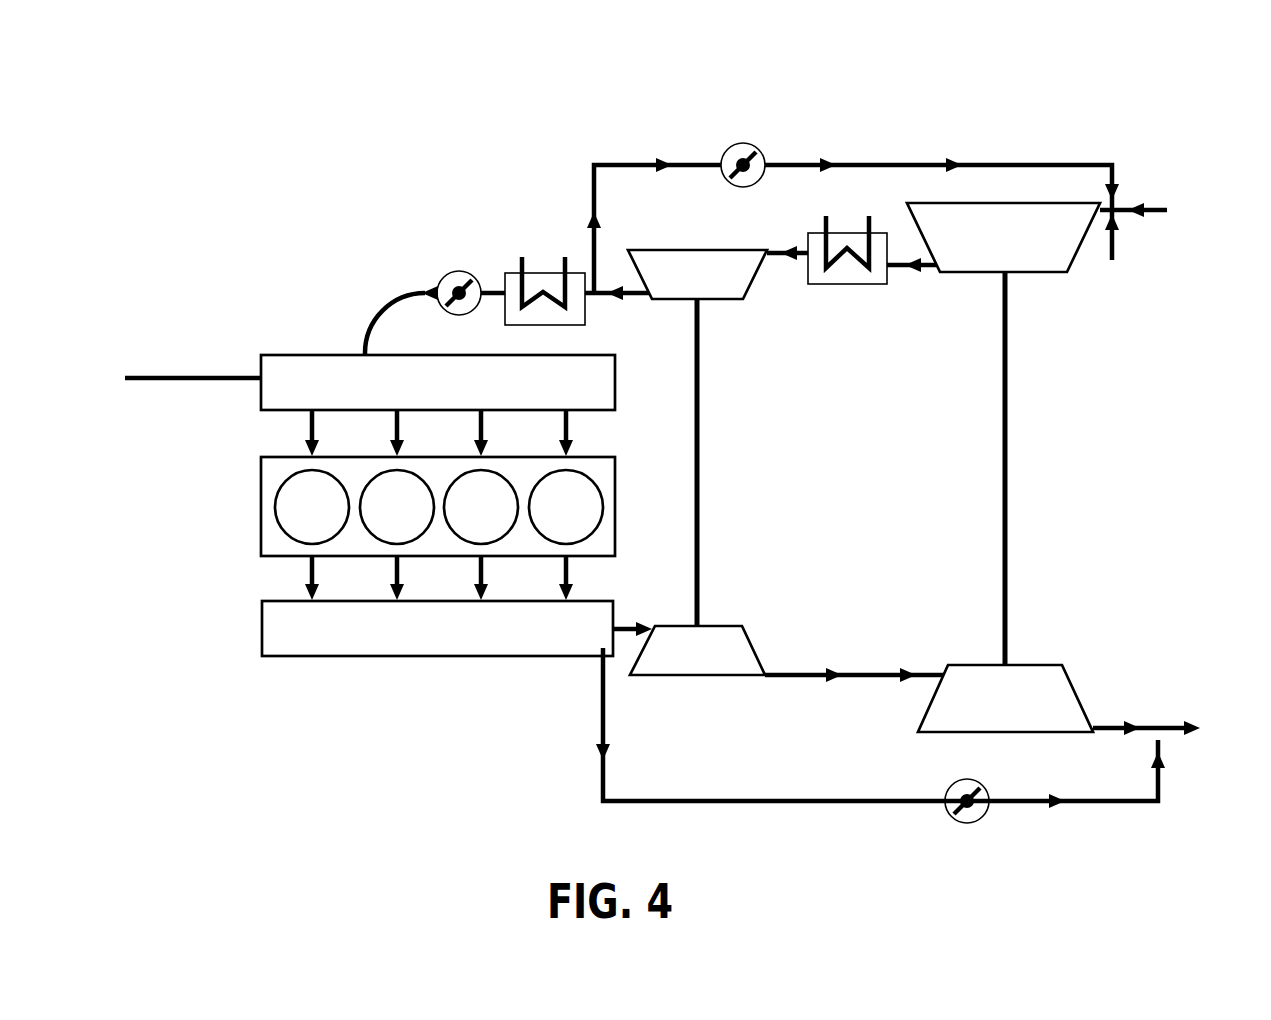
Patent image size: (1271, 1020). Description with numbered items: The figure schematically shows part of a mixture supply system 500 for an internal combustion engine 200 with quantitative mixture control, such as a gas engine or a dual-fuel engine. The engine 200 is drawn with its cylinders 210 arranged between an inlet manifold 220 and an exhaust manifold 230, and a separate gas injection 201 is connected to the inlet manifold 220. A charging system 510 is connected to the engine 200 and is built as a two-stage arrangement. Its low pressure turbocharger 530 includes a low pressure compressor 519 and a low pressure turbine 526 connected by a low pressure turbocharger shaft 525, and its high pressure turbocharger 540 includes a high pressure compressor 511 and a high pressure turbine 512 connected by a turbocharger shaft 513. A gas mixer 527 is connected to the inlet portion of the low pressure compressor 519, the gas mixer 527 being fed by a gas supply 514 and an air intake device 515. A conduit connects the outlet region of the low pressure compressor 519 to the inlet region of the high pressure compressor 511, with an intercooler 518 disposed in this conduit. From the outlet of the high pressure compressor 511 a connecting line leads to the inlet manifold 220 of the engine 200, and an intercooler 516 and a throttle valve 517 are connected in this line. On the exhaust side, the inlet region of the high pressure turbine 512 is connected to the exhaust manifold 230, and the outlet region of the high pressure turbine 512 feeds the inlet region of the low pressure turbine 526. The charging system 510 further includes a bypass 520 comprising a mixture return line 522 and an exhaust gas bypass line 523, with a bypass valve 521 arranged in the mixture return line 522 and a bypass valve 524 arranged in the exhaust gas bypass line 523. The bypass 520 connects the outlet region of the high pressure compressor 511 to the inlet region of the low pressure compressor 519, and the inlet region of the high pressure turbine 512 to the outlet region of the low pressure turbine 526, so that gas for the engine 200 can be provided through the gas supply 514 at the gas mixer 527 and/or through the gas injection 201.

The internal combustion engine 200 is at (154, 232).
The gas injection 201 is at (163, 358).
The cylinder 210 is at (527, 467).
The inlet manifold 220 is at (299, 338).
The exhaust manifold 230 is at (249, 636).
The mixture supply system 500 is at (460, 122).
The charging system 510 is at (736, 698).
The high pressure compressor 511 is at (766, 296).
The high pressure turbine 512 is at (789, 516).
The turbocharger shaft 513 is at (712, 486).
The gas supply 514 is at (1112, 280).
The air intake device 515 is at (1140, 193).
The intercooler 516 is at (546, 252).
The throttle valve 517 is at (435, 256).
The intercooler 518 is at (885, 308).
The low pressure compressor 519 is at (1046, 292).
The bypass 520 is at (902, 144).
The bypass valve 521 is at (750, 131).
The mixture return line 522 is at (803, 143).
The exhaust gas bypass line 523 is at (856, 813).
The bypass valve 524 is at (933, 834).
The low pressure turbocharger shaft 525 is at (1024, 476).
The low pressure turbine 526 is at (1025, 655).
The gas mixer 527 is at (1132, 225).
The low pressure turbocharger 530 is at (1044, 469).
The high pressure turbocharger 540 is at (719, 386).